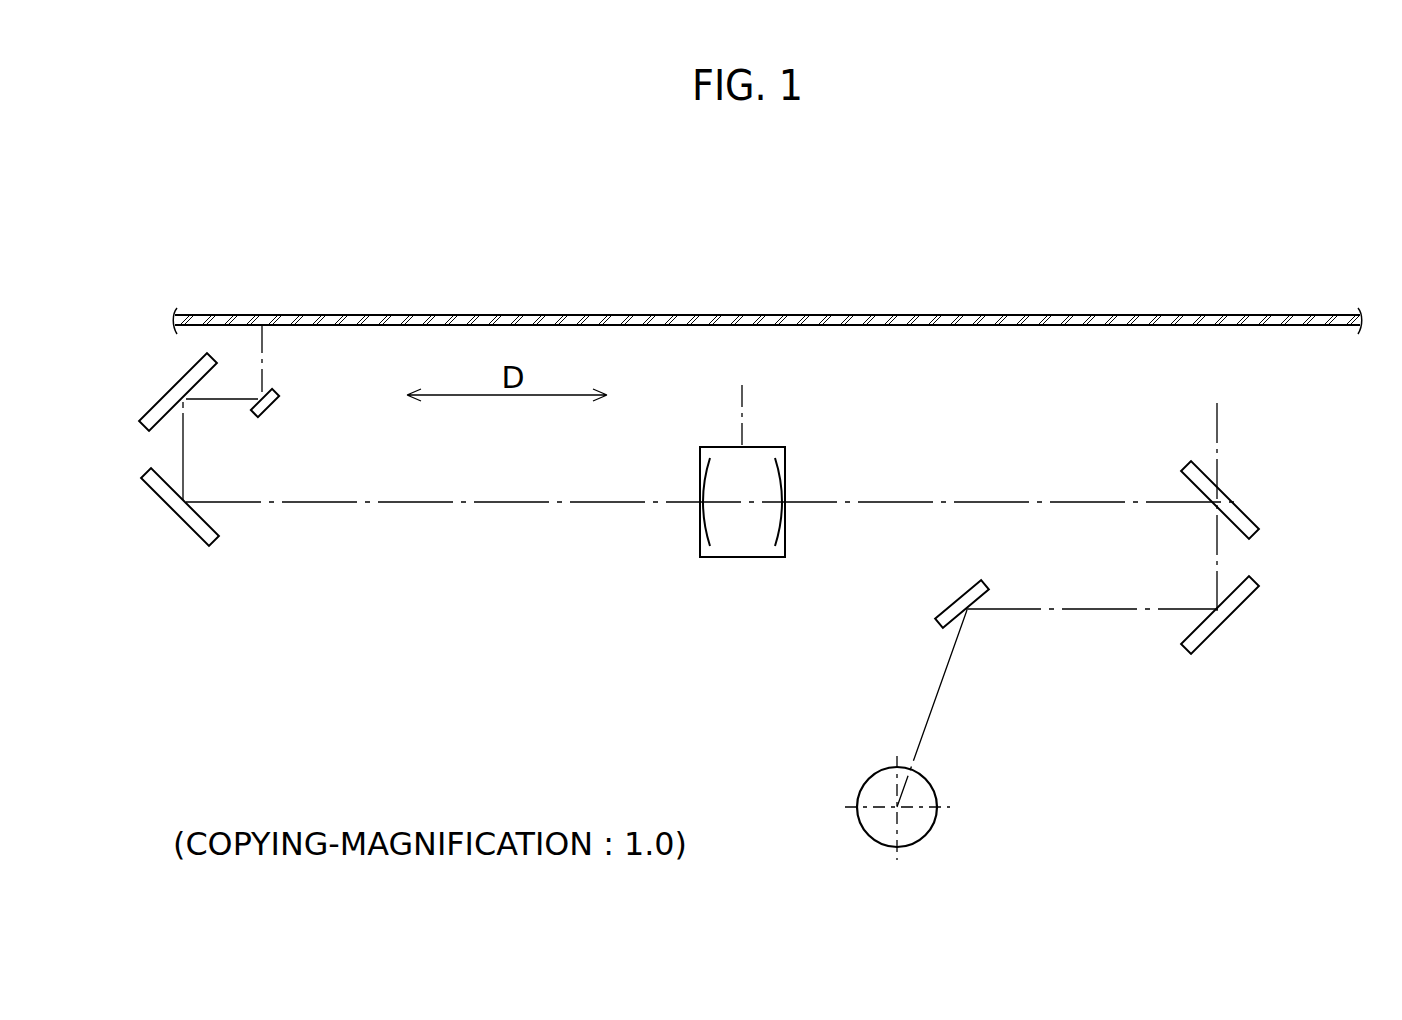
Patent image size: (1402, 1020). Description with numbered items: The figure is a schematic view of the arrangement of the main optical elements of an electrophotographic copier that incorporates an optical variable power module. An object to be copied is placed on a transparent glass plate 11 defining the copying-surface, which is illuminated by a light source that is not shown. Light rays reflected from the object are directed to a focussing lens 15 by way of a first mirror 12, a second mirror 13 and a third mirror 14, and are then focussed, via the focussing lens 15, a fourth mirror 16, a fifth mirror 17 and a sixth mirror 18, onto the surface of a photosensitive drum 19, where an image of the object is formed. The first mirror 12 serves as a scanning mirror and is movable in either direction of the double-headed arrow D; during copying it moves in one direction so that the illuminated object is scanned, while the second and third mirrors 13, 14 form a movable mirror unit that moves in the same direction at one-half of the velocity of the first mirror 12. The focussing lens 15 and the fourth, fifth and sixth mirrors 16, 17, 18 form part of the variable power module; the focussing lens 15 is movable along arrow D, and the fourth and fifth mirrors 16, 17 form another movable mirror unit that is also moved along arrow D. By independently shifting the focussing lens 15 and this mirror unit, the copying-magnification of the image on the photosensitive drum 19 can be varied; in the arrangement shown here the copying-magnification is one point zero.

The transparent glass plate 11 is at (668, 315).
The first mirror 12 is at (276, 411).
The second mirror 13 is at (172, 386).
The third mirror 14 is at (170, 508).
The focussing lens 15 is at (743, 557).
The fourth mirror 16 is at (1237, 506).
The fifth mirror 17 is at (1234, 621).
The sixth mirror 18 is at (958, 596).
The photosensitive drum 19 is at (932, 788).